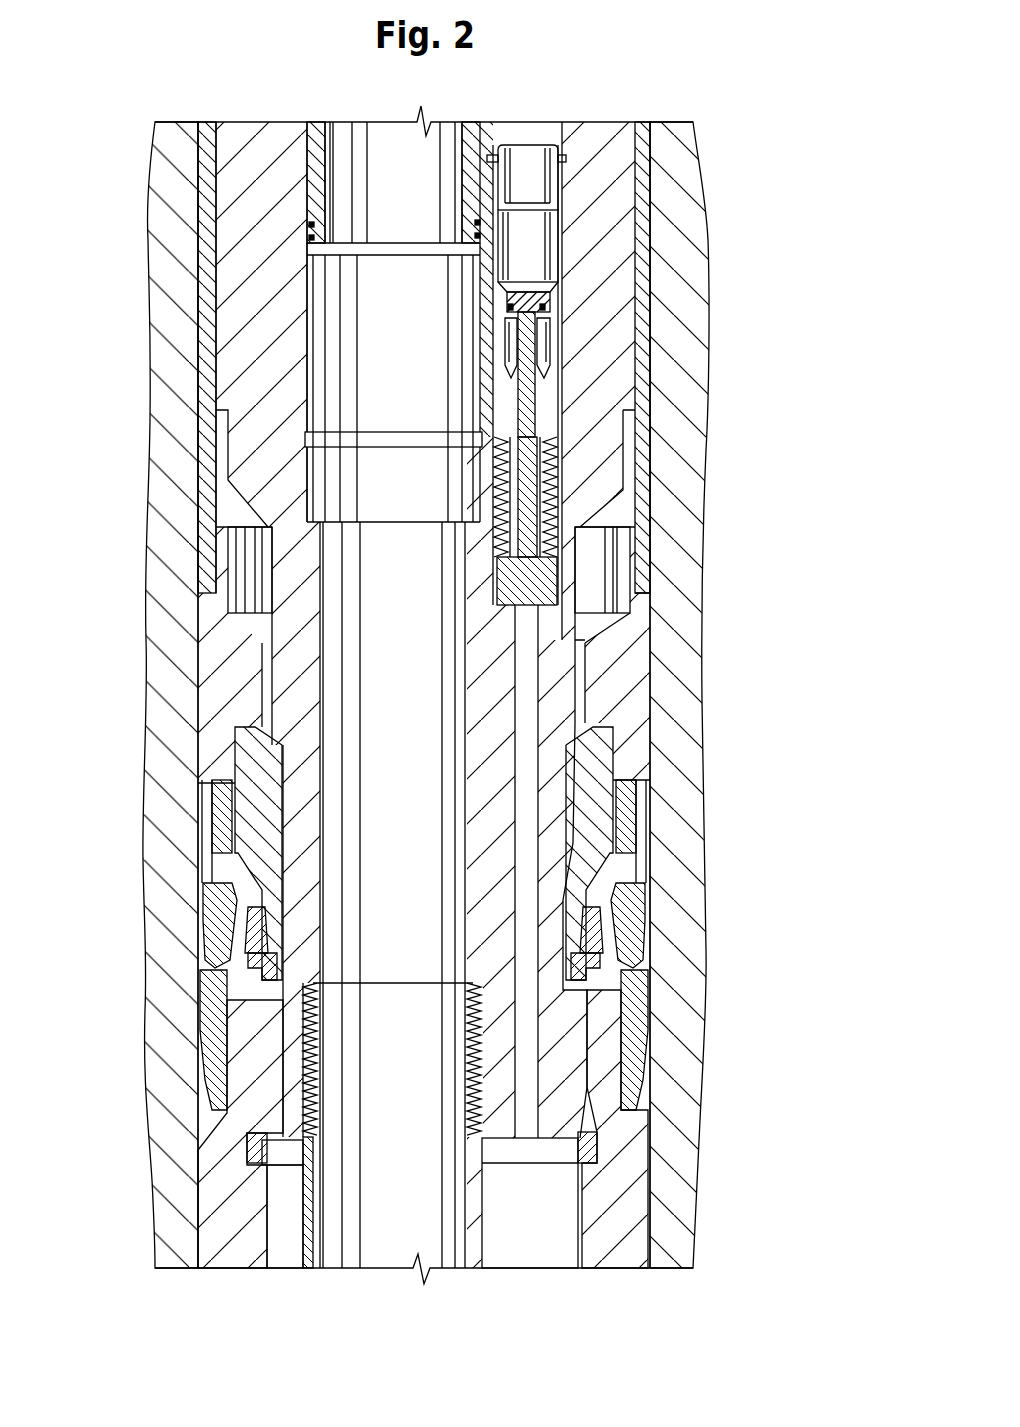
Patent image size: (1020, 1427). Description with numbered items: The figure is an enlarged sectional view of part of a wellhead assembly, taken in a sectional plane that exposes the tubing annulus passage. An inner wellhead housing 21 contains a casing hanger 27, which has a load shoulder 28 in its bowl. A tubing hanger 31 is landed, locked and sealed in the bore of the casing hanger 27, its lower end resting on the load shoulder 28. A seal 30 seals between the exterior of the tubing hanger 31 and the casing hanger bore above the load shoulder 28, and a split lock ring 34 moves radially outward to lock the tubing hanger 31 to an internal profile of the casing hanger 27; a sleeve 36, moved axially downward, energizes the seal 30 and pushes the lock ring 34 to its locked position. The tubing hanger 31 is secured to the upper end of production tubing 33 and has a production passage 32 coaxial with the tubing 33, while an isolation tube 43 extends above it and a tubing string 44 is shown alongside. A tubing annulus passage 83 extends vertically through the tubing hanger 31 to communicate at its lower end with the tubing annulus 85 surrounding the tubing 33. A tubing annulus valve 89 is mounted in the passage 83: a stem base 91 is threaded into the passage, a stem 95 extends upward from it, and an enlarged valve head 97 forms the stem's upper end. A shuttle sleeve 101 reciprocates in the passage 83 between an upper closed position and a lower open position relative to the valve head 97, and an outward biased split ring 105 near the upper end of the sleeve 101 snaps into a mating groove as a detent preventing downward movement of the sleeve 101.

The inner wellhead housing 21 is at (163, 545).
The casing hanger 27 is at (208, 1195).
The load shoulder 28 is at (258, 1146).
The seal 30 is at (255, 1022).
The tubing hanger 31 is at (258, 386).
The production passage 32 is at (422, 566).
The production tubing 33 is at (310, 1227).
The split lock ring 34 is at (255, 948).
The sleeve 36 is at (250, 770).
The isolation tube 43 is at (315, 155).
The tubing 44 is at (207, 297).
The tubing annulus passage 83 is at (535, 684).
The tubing annulus 85 is at (543, 1216).
The tubing annulus valve 89 is at (572, 380).
The stem base 91 is at (535, 578).
The stem 95 is at (523, 483).
The valve head 97 is at (540, 322).
The shuttle sleeve 101 is at (545, 288).
The split ring 105 is at (566, 160).